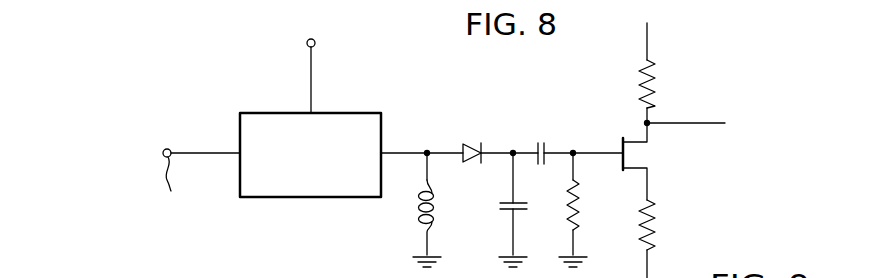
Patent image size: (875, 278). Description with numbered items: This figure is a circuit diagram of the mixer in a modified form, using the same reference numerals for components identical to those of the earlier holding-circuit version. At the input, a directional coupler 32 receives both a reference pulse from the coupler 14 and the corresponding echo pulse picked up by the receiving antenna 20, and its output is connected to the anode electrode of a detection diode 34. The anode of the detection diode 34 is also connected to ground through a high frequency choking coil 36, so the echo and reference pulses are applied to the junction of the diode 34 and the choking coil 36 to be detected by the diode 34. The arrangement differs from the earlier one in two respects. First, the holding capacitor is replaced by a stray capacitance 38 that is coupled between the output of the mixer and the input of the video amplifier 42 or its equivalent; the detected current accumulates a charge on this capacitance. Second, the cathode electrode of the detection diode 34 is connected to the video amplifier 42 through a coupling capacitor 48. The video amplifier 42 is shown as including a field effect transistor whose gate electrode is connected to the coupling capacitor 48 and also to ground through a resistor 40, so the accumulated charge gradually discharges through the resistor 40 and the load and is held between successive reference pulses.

The coupler 14 is at (359, 73).
The receiving antenna 20 is at (195, 157).
The directional coupler 32 is at (392, 104).
The detection diode 34 is at (470, 140).
The high frequency choking coil 36 is at (440, 207).
The stray capacitance 38 is at (520, 208).
The resistor 40 is at (580, 205).
The video amplifier 42 is at (696, 178).
The coupling capacitor 48 is at (546, 141).